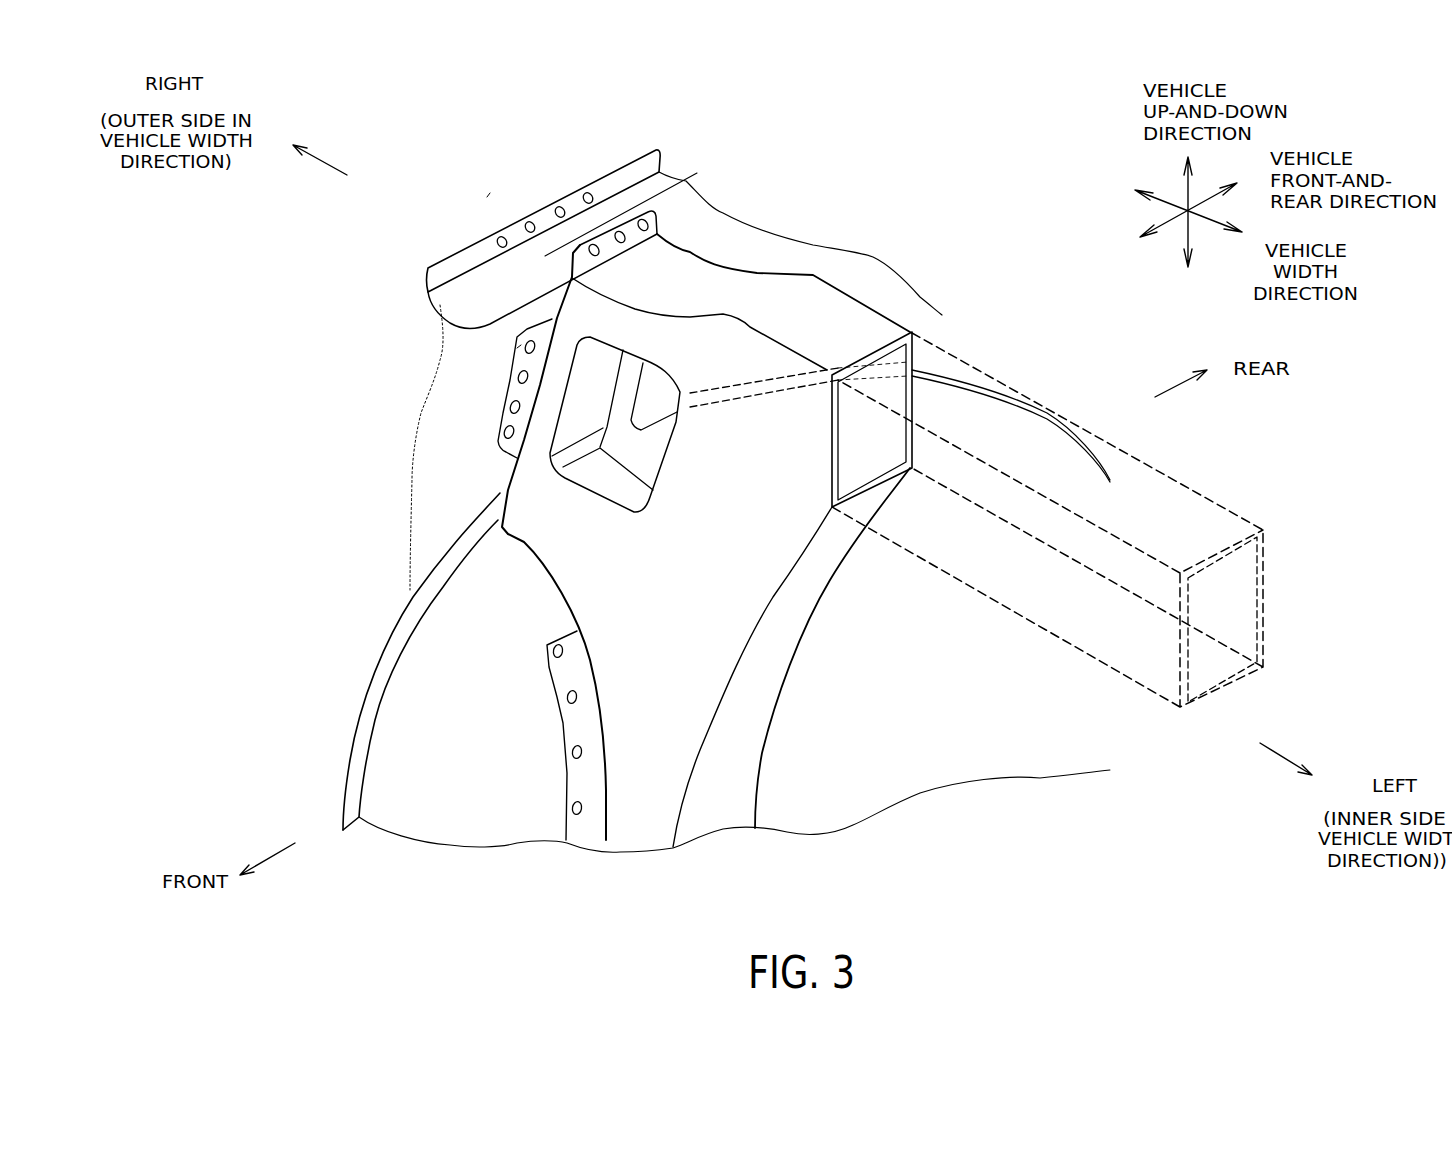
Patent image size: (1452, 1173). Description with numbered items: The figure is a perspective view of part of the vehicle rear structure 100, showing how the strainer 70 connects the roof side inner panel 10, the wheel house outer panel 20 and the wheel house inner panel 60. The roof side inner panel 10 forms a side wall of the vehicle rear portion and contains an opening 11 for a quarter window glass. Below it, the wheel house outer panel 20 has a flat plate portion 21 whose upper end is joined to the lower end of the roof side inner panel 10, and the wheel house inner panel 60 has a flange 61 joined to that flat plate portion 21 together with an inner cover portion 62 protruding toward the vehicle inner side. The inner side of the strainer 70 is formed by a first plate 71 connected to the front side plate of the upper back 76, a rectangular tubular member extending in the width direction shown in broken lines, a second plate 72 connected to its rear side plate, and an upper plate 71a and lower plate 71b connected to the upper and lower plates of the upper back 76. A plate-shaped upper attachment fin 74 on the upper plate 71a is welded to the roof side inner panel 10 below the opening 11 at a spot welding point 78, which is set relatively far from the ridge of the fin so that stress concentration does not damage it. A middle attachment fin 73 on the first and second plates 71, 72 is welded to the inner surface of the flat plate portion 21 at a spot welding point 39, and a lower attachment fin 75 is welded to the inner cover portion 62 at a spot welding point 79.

The roof side inner panel 10 is at (705, 194).
The opening 11 is at (487, 197).
The wheel house outer panel 20 is at (426, 475).
The flat plate portion 21 is at (437, 422).
The spot welding point 39 is at (517, 348).
The wheel house inner panel 60 is at (452, 805).
The flange 61 is at (347, 807).
The inner cover portion 62 is at (505, 798).
The strainer 70 is at (822, 265).
The first plate 71 is at (567, 557).
The upper plate 71a is at (846, 308).
The lower plate 71b is at (767, 650).
The second plate 72 is at (630, 453).
The middle attachment fin 73 is at (507, 393).
The upper attachment fin 74 is at (608, 243).
The lower attachment fin 75 is at (560, 670).
The upper back 76 is at (1180, 483).
The spot welding point 78 is at (678, 222).
The spot welding point 79 is at (570, 698).
The vehicle rear structure 100 is at (988, 171).